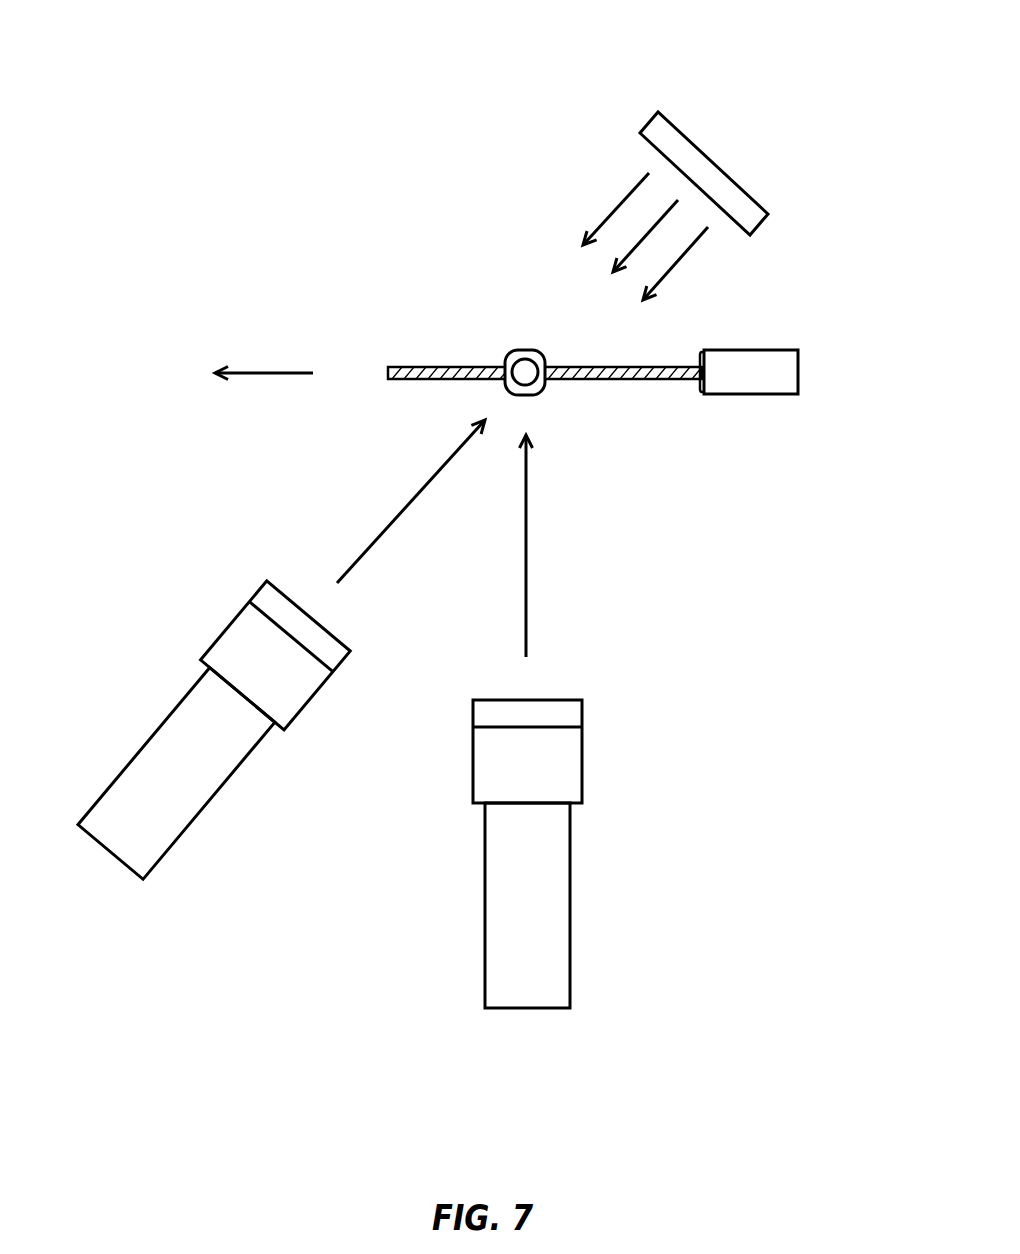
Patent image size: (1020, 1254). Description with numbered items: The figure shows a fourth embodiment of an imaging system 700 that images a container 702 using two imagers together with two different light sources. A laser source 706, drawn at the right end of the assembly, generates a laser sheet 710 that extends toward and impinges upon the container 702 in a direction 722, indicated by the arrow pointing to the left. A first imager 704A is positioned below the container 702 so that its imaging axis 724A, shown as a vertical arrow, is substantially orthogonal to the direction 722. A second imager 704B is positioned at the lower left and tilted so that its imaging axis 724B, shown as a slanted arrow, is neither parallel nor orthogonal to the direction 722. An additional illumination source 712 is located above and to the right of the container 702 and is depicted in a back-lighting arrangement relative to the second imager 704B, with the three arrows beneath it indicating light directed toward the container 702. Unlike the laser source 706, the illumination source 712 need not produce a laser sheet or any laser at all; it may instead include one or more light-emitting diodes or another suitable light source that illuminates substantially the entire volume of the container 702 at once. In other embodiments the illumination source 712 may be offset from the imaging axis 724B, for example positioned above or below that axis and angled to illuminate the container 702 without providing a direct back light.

The imaging system 700 is at (142, 63).
The container 702 is at (532, 350).
The first imager 704A is at (572, 850).
The second imager 704B is at (230, 767).
The laser source 706 is at (798, 360).
The laser sheet 710 is at (605, 380).
The illumination source 712 is at (698, 143).
The direction 722 is at (260, 374).
The imaging axis 724A is at (528, 518).
The imaging axis 724B is at (390, 527).